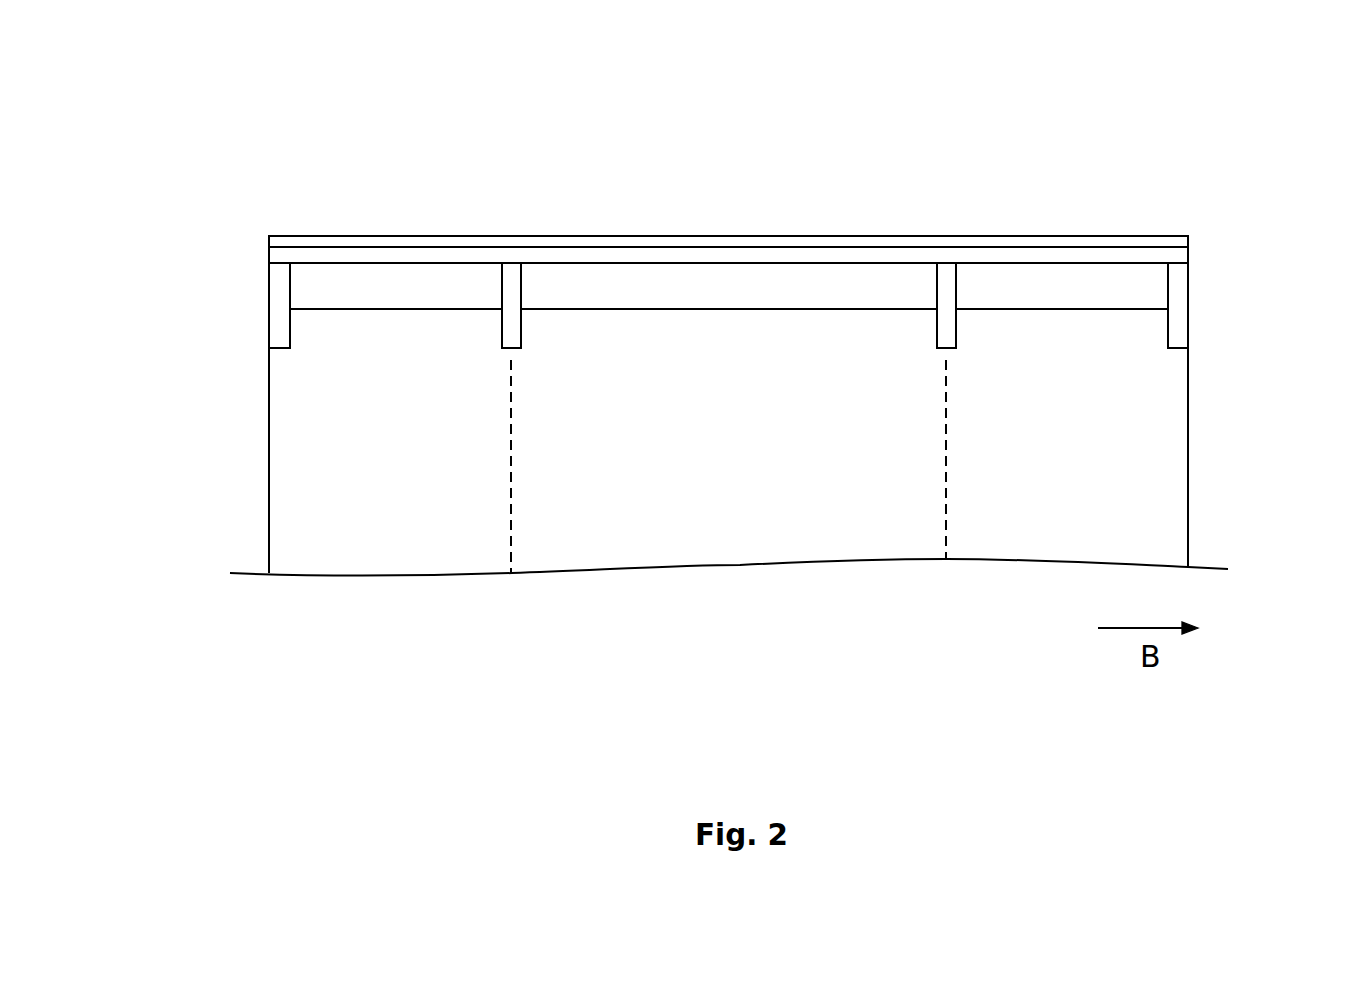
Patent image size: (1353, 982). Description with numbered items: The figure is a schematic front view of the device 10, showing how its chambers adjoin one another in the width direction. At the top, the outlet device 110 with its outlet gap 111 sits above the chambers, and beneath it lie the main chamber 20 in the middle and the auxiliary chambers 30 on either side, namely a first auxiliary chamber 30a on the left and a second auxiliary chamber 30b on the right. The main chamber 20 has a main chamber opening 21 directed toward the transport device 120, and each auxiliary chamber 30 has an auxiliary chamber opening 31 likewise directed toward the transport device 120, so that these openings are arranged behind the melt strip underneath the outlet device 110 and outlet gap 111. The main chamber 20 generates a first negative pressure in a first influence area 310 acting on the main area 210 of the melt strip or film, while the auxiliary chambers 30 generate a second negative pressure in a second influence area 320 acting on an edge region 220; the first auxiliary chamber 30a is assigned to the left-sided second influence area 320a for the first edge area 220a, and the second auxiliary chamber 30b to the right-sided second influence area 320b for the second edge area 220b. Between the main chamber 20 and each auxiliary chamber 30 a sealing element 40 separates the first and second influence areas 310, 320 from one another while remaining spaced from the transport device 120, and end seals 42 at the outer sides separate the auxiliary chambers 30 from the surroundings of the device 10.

The device 10 is at (719, 350).
The outlet device 110 is at (1190, 252).
The outlet gap 111 is at (288, 244).
The main chamber opening 21 is at (622, 262).
The auxiliary chamber opening 31 is at (470, 268).
The main chamber 20 is at (729, 290).
The auxiliary chamber 30 is at (729, 289).
The first auxiliary chamber 30a is at (396, 289).
The second auxiliary chamber 30b is at (1062, 289).
The sealing element 40 is at (502, 322).
The end seal 42 is at (268, 313).
The transport device 120 is at (268, 550).
The edge region 220 is at (728, 460).
The first edge area 220a is at (353, 460).
The second edge area 220b is at (1107, 457).
The main area 210 is at (728, 466).
The first influence area 310 is at (802, 366).
The second influence area 320 is at (748, 439).
The left-sided second influence area 320a is at (305, 365).
The right-sided second influence area 320b is at (1142, 365).